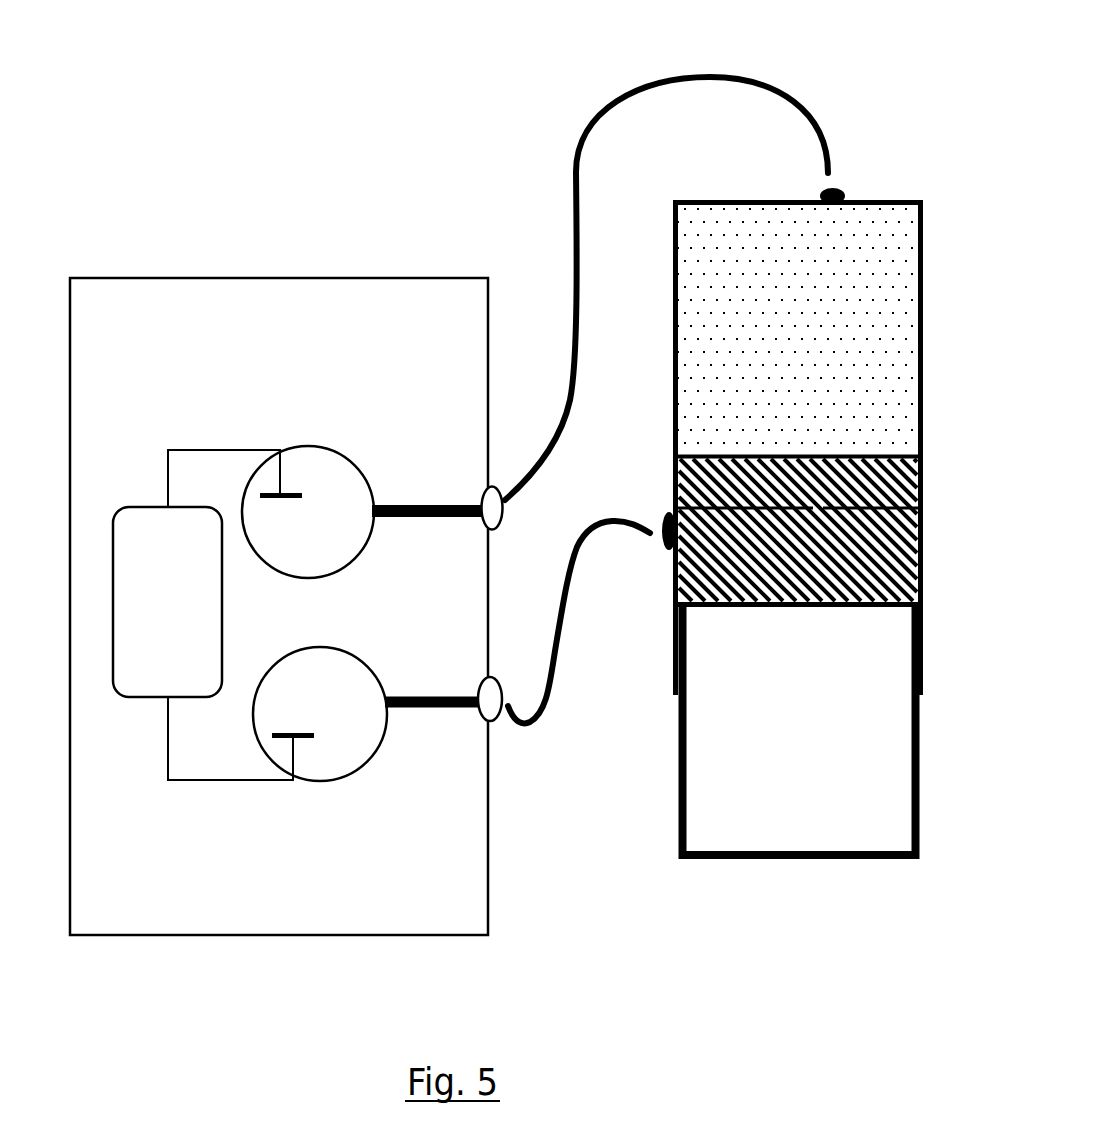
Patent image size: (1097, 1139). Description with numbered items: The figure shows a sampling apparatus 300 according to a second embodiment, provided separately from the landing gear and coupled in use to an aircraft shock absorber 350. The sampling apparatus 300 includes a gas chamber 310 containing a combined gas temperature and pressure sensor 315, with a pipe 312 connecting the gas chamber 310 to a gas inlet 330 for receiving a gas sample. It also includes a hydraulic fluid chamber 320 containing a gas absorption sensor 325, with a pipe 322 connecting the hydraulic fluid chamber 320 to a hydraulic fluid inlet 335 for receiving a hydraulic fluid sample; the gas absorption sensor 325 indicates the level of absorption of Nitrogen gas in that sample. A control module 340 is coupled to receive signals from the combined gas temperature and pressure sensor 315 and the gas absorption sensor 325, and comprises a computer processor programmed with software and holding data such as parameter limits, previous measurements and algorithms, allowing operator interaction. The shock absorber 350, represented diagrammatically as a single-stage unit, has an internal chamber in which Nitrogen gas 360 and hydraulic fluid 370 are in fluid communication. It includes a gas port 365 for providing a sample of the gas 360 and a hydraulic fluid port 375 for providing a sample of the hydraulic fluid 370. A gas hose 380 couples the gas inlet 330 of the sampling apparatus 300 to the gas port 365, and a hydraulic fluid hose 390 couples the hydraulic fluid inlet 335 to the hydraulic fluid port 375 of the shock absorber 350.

The sampling apparatus 300 is at (311, 925).
The gas chamber 310 is at (340, 548).
The pipe 312 is at (431, 503).
The combined gas temperature and pressure sensor 315 is at (272, 487).
The hydraulic fluid chamber 320 is at (351, 717).
The pipe 322 is at (437, 712).
The gas absorption sensor 325 is at (277, 743).
The gas inlet 330 is at (478, 489).
The hydraulic fluid inlet 335 is at (480, 727).
The control module 340 is at (198, 621).
The aircraft shock absorber 350 is at (652, 829).
The Nitrogen gas 360 is at (829, 380).
The gas port 365 is at (838, 188).
The hydraulic fluid 370 is at (828, 587).
The hydraulic fluid port 375 is at (665, 530).
The gas hose 380 is at (575, 150).
The hydraulic fluid hose 390 is at (570, 623).